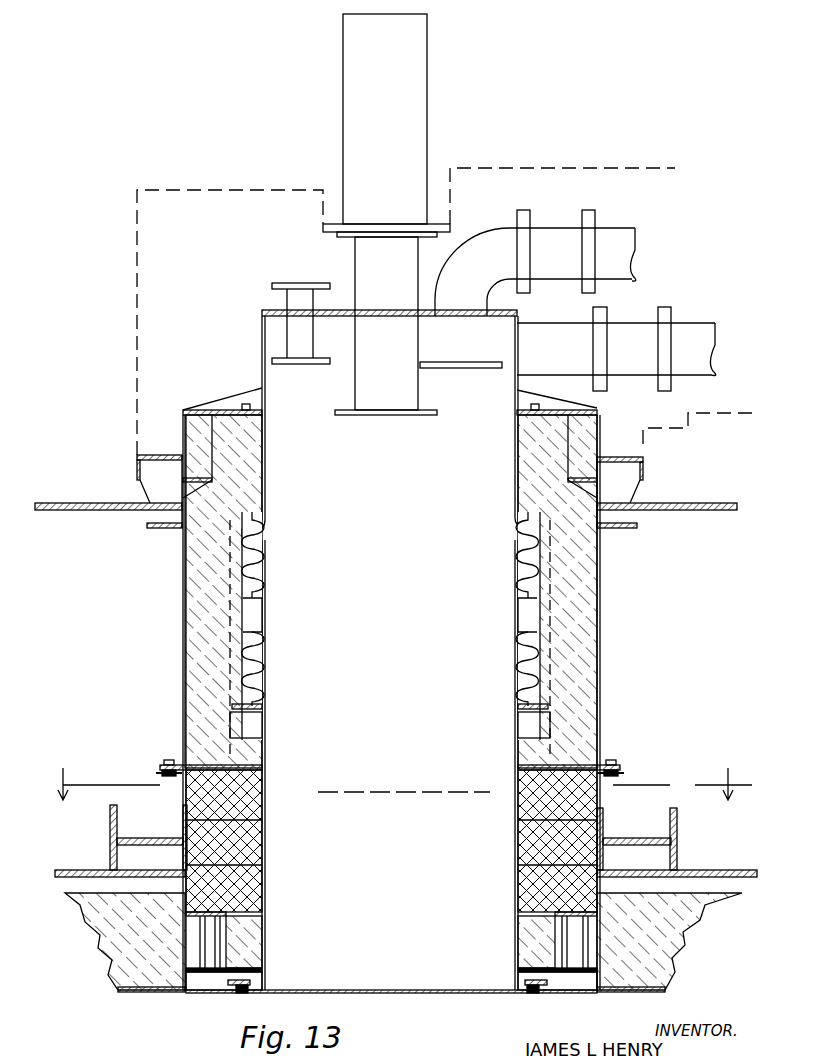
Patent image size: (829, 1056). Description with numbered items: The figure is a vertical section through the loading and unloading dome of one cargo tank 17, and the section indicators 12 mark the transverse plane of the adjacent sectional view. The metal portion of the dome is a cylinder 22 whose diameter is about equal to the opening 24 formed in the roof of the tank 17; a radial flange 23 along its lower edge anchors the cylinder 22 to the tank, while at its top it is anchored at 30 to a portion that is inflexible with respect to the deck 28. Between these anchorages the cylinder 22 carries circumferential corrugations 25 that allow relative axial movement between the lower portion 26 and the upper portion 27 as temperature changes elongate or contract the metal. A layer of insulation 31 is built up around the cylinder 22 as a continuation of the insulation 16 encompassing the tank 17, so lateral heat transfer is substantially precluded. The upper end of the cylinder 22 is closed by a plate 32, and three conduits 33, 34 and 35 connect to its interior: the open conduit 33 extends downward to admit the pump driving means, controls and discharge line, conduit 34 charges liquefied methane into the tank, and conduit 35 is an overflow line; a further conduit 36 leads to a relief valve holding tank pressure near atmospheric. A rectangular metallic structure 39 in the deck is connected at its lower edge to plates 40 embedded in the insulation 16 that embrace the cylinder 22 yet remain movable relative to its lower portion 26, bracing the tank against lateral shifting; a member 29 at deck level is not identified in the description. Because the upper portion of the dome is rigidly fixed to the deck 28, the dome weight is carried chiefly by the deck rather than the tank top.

The section line 12- 12 is at (399, 775).
The insulation 16 is at (95, 947).
The cargo tank 17 is at (157, 992).
The cylinder 22 is at (266, 762).
The radial flange 23 is at (226, 993).
The opening 24 is at (392, 990).
The circumferential corrugations 25 is at (265, 578).
The lower portion of the cylinder 26 is at (266, 847).
The upper portion of the cylinder 27 is at (266, 466).
The deck 28 is at (86, 496).
The base support plate 29 is at (76, 870).
The anchorage 30 is at (262, 412).
The layer of insulation 31 is at (183, 609).
The plate 32 is at (338, 310).
The conduit 33 is at (386, 326).
The conduit 34 is at (528, 289).
The conduit 35 is at (616, 349).
The conduit 36 is at (306, 338).
The rectangular metallic structure 39 is at (185, 797).
The plates 40 is at (203, 973).